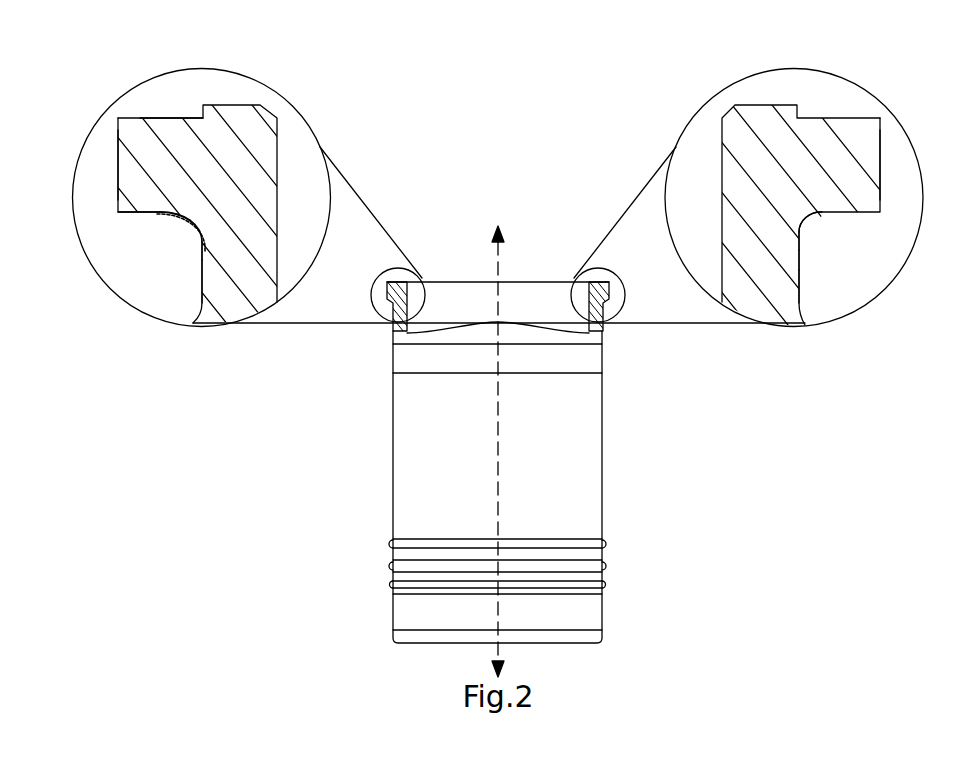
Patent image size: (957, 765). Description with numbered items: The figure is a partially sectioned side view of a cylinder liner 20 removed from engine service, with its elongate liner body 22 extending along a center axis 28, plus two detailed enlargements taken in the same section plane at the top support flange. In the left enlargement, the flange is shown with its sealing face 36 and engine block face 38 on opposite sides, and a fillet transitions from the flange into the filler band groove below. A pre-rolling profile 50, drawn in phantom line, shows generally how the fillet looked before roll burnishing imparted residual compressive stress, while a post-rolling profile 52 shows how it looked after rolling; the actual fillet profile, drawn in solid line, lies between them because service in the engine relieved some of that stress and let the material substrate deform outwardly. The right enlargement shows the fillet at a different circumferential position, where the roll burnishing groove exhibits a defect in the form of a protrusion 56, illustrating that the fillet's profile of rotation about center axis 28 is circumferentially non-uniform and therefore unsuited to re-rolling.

The cylinder liner 20 is at (319, 432).
The elongate liner body 22 is at (393, 472).
The center axis 28 is at (498, 478).
The sealing face 36 is at (169, 108).
The engine block face 38 is at (129, 220).
The pre-rolling profile 50 is at (174, 228).
The post-rolling profile 52 is at (204, 207).
The protrusion 56 is at (806, 223).